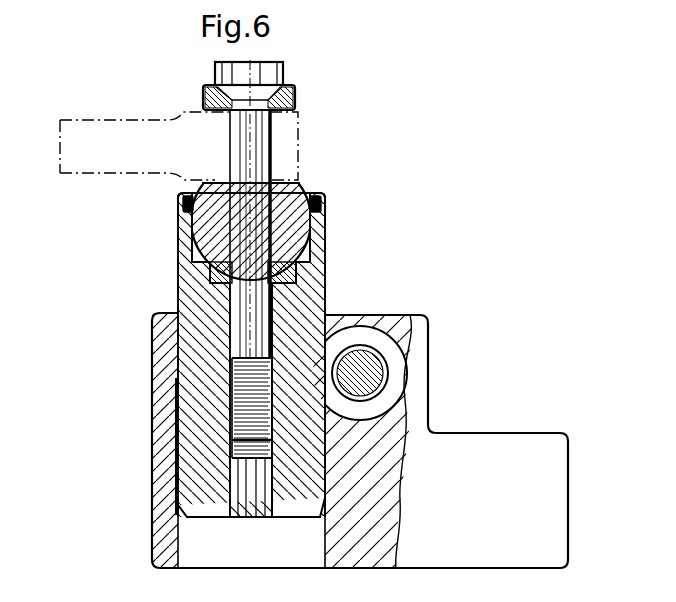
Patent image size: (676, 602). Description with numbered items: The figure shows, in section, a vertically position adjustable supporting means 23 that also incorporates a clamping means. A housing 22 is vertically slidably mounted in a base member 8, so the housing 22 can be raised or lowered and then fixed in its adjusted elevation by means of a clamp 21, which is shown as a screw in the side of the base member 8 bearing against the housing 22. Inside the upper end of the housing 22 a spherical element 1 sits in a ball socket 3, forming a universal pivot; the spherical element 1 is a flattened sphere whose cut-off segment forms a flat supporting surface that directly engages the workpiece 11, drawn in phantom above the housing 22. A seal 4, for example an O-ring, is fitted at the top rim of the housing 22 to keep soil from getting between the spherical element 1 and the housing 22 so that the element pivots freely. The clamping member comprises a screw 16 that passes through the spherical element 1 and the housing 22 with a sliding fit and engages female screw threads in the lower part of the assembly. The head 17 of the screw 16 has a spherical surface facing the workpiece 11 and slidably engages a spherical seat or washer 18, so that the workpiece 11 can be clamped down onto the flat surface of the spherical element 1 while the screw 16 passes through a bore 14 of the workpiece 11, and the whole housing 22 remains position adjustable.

The spherical element 1 is at (294, 234).
The ball socket 3 is at (210, 272).
The seal 4 is at (326, 201).
The base member 8 is at (163, 452).
The workpiece 11 is at (120, 130).
The bore of the workpiece 14 is at (228, 146).
The screw 16 is at (256, 166).
The head of the screw 17 is at (272, 74).
The spherical seat or washer 18 is at (293, 100).
The clamp 21 is at (383, 340).
The housing 22 is at (200, 336).
The supporting means 23 is at (176, 224).